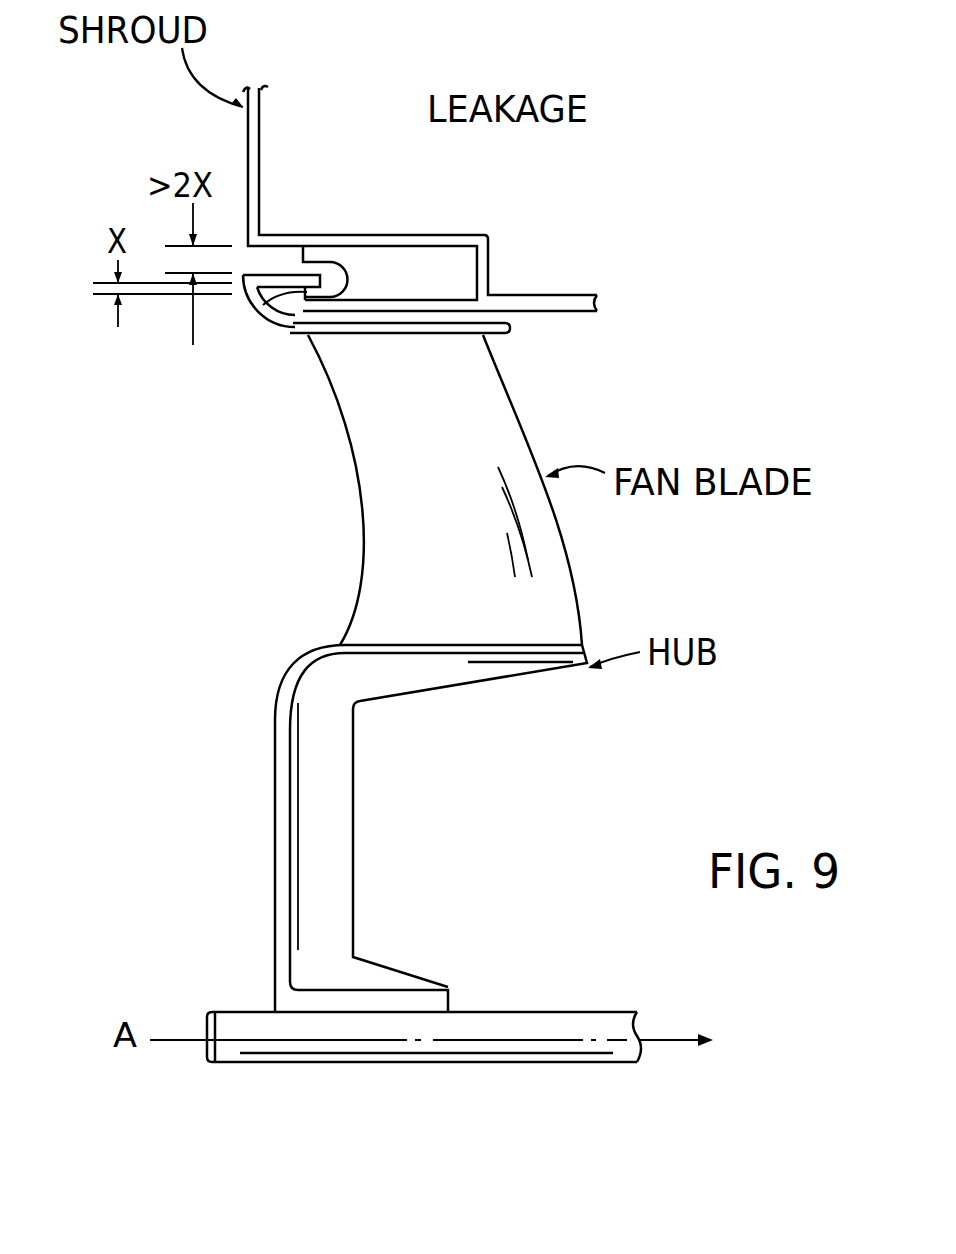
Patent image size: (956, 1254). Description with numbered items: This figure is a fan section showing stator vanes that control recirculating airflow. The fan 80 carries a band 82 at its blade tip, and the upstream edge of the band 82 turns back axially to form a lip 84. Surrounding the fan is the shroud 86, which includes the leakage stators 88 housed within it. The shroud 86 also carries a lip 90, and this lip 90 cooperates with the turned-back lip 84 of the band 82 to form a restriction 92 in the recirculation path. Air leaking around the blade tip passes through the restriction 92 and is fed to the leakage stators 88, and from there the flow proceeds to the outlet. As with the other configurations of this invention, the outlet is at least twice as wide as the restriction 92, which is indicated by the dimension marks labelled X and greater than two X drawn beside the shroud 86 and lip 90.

The fan 80 is at (362, 667).
The band 82 is at (443, 335).
The lip 84 is at (268, 275).
The shroud 86 is at (260, 103).
The leakage stators 88 is at (386, 263).
The lip 90 is at (300, 310).
The restriction 92 is at (284, 299).